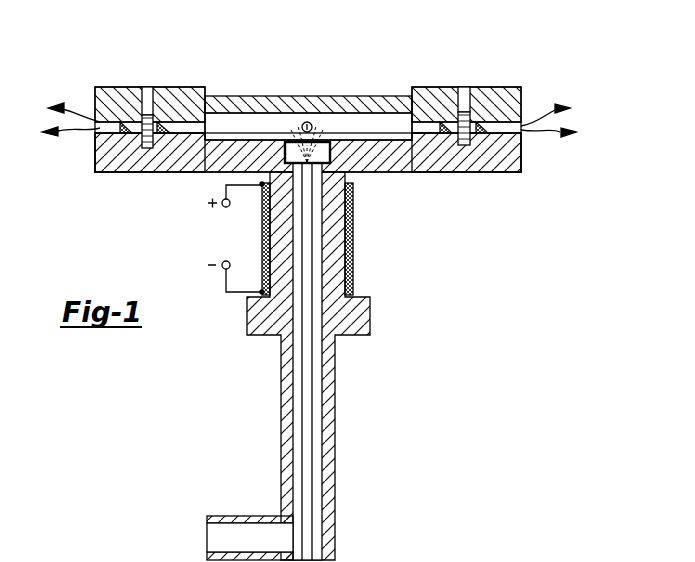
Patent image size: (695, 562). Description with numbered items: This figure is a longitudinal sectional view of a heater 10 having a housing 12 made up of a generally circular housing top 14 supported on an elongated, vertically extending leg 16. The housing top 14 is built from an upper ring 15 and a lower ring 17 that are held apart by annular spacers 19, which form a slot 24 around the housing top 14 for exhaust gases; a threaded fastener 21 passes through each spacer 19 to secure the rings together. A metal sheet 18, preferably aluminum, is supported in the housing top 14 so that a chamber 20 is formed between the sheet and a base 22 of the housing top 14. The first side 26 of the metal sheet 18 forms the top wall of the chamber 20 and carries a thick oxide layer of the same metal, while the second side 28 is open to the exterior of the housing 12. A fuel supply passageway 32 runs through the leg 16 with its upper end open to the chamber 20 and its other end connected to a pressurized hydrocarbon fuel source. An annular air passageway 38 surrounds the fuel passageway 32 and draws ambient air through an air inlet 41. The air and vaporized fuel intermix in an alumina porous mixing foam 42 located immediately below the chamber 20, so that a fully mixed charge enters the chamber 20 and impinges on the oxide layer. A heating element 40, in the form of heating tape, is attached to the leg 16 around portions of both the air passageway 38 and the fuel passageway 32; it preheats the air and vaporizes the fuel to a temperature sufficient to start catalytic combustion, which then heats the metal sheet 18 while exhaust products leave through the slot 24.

The heater 10 is at (510, 54).
The housing 12 is at (523, 107).
The housing top 14 is at (167, 87).
The upper ring 15 is at (97, 100).
The leg 16 is at (280, 413).
The lower ring 17 is at (521, 161).
The metal sheet 18 is at (397, 96).
The annular spacers 19 is at (177, 118).
The chamber 20 is at (283, 125).
The threaded fastener 21 is at (147, 87).
The base 22 is at (217, 162).
The slot 24 is at (113, 129).
The first side 26 is at (357, 116).
The second side 28 is at (247, 96).
The fuel supply passageway 32 is at (308, 435).
The annular air passageway 38 is at (252, 540).
The heating element 40 is at (353, 226).
The air inlet 41 is at (232, 533).
The alumina porous mixing foam 42 is at (332, 150).